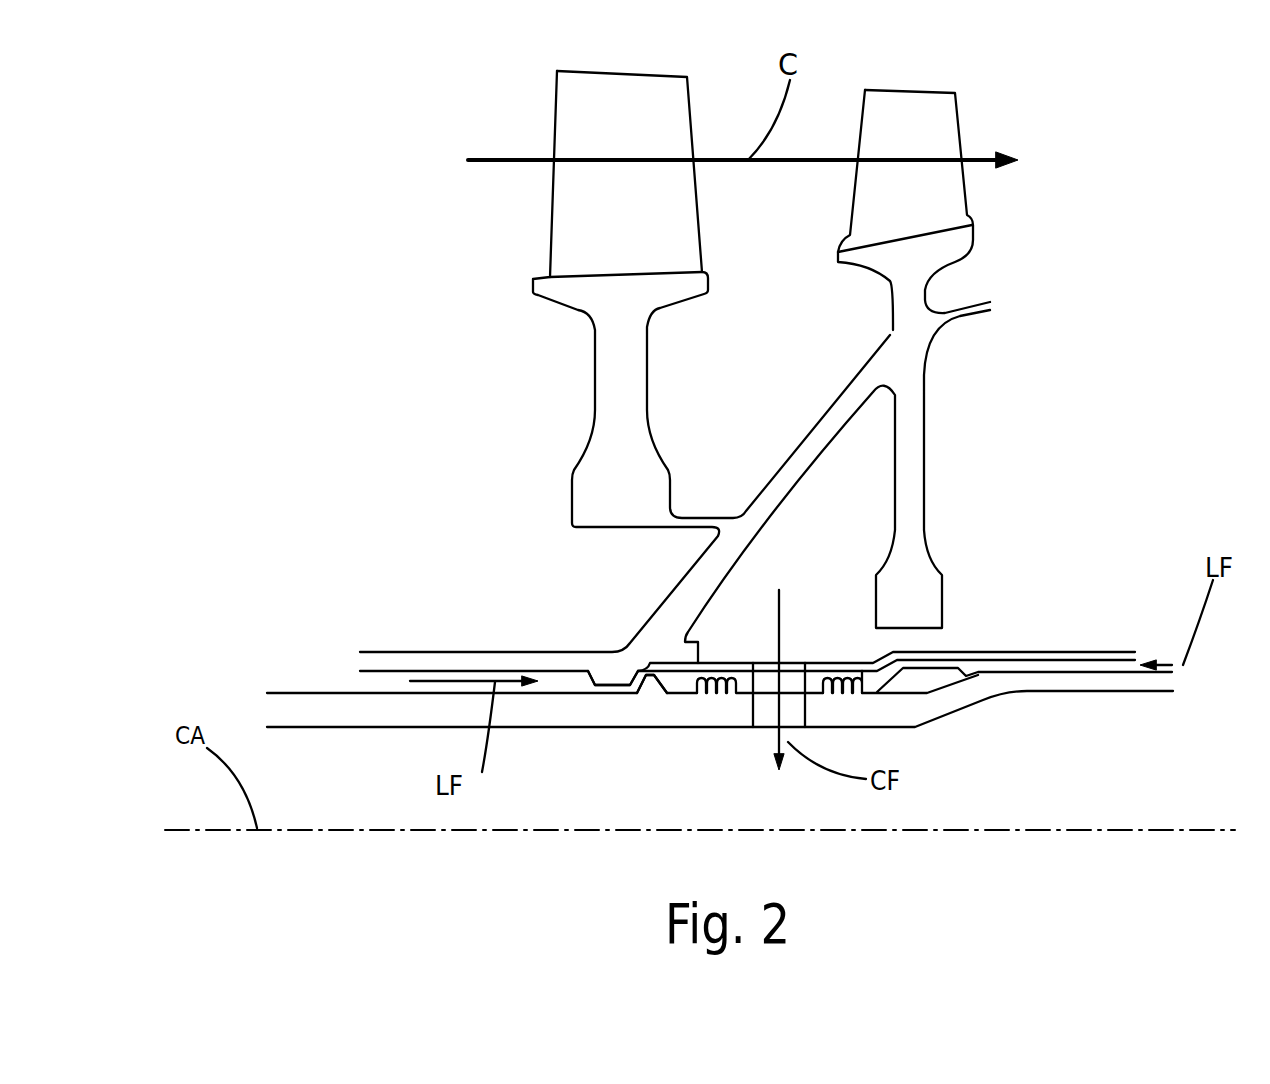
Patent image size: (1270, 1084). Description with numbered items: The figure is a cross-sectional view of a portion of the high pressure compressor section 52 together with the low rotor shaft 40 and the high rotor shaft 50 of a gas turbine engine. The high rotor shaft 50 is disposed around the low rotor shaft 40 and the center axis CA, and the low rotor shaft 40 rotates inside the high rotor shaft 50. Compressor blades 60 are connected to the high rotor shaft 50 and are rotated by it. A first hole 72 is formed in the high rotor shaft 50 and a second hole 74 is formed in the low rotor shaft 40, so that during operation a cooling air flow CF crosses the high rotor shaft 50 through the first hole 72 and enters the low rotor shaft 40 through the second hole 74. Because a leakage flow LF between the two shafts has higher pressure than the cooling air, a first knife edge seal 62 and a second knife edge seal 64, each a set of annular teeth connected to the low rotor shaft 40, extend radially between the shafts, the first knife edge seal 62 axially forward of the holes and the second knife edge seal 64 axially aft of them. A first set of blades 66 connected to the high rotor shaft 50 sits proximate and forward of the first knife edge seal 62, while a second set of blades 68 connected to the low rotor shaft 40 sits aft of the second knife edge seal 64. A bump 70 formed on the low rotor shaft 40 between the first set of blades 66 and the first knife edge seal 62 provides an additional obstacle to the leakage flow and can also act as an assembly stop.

The low rotor shaft 40 is at (300, 712).
The high rotor shaft 50 is at (465, 658).
The high pressure compressor section 52 is at (794, 247).
The compressor blades 60 is at (553, 205).
The first knife edge seal 62 is at (717, 693).
The second knife edge seal 64 is at (847, 675).
The first set of blades 66 is at (612, 678).
The second set of blades 68 is at (925, 682).
The bump 70 is at (655, 686).
The first hole 72 is at (767, 663).
The second hole 74 is at (768, 713).